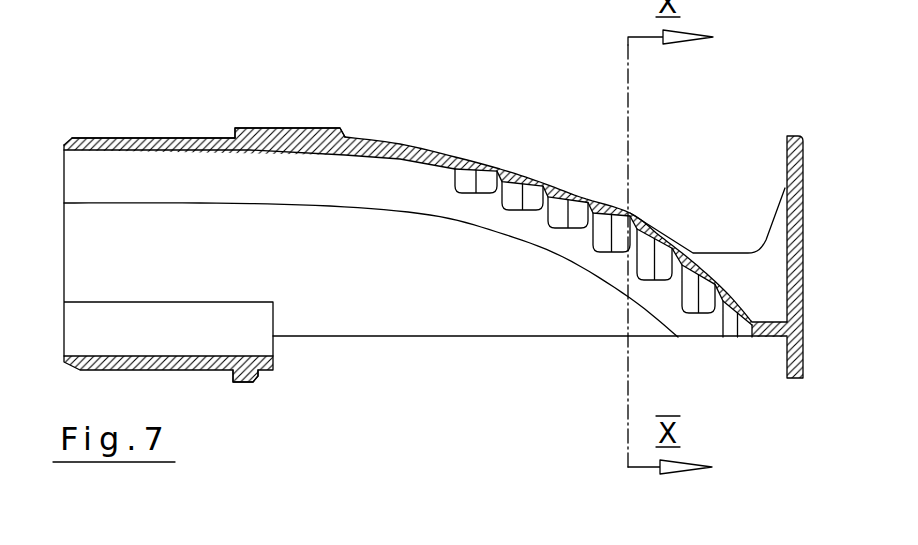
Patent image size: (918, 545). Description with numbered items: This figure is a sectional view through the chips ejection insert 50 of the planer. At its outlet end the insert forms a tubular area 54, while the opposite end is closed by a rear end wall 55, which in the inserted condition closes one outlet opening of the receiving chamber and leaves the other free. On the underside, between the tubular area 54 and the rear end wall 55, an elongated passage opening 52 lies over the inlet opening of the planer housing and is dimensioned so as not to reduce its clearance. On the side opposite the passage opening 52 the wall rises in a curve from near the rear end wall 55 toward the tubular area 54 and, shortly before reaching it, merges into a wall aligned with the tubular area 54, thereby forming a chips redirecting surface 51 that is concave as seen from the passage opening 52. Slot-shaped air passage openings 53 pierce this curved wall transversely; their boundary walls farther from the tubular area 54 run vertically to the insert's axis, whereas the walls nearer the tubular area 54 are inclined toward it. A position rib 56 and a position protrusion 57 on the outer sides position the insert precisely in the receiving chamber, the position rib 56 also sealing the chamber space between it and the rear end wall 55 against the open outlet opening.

The chips ejection insert 50 is at (410, 120).
The chips redirecting surface 51 is at (594, 217).
The passage opening 52 is at (419, 350).
The air passage openings 53 is at (527, 180).
The tubular area 54 is at (108, 138).
The rear end wall 55 is at (786, 143).
The position rib 56 is at (247, 381).
The position protrusion 57 is at (318, 138).